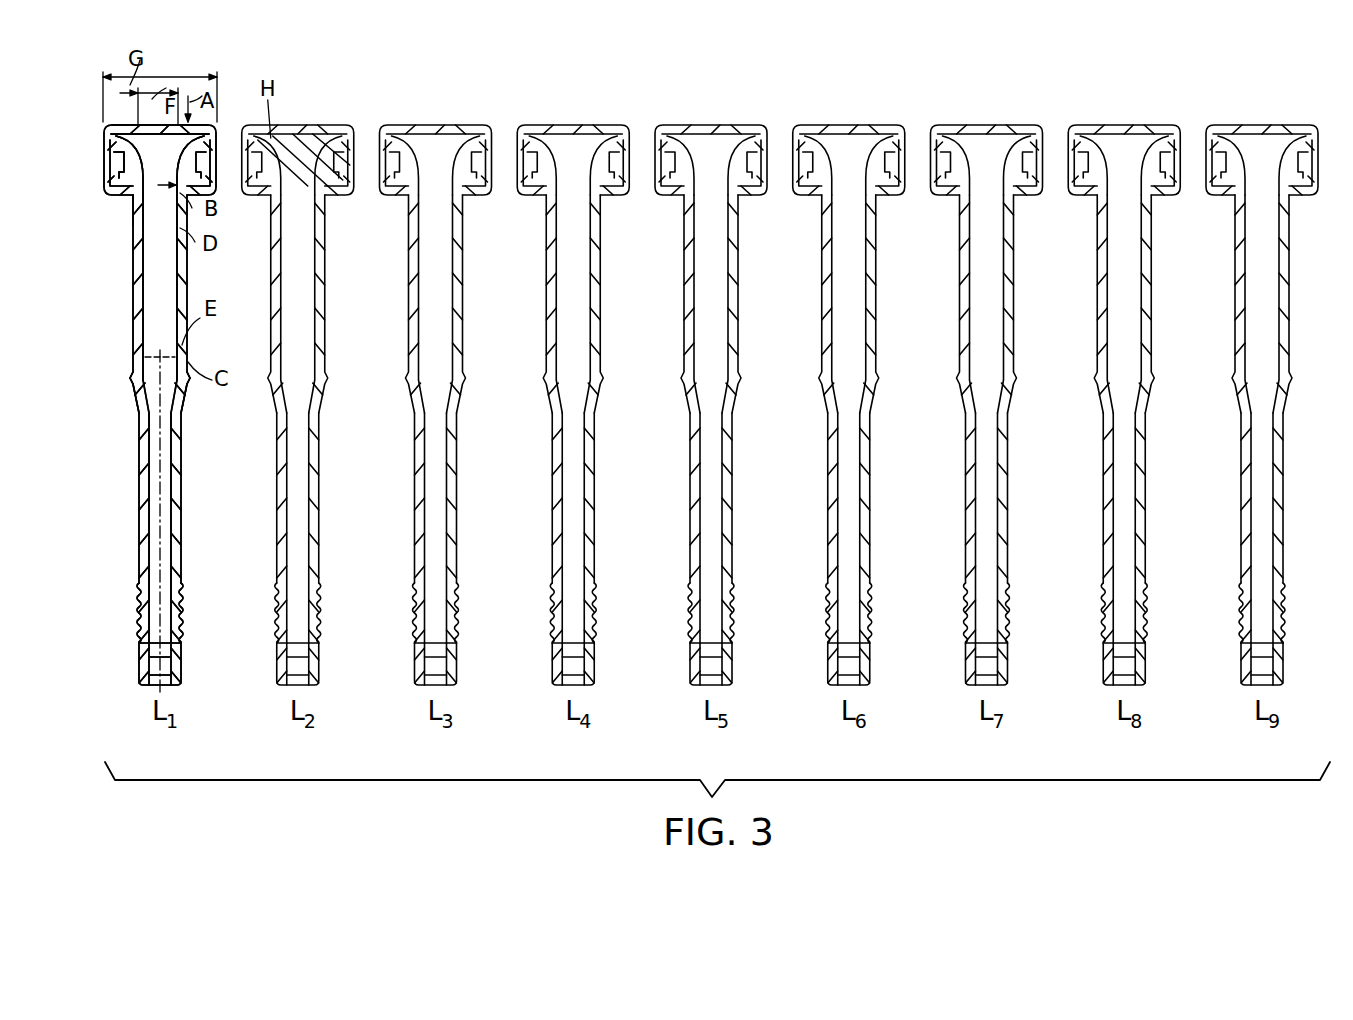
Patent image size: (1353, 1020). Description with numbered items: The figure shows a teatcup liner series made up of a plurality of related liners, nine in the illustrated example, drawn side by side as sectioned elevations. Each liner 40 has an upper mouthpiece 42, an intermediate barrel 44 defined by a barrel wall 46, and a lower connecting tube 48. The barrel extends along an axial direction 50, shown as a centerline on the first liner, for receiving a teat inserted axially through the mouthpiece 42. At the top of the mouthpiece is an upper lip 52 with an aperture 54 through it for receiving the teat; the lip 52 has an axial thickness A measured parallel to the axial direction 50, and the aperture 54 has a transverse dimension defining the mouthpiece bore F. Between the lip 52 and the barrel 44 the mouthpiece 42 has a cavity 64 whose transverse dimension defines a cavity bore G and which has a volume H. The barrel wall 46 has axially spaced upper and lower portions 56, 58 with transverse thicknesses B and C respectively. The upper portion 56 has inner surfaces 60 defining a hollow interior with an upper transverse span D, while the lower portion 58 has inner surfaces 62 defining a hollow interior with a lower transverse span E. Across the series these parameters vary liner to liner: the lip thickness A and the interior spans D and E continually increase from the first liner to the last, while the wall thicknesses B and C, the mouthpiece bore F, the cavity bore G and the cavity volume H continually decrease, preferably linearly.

The liner 40 is at (142, 405).
The upper mouthpiece 42 is at (135, 160).
The intermediate barrel 44 is at (129, 304).
The barrel wall 46 is at (122, 287).
The lower connecting tube 48 is at (135, 549).
The axial direction 50 is at (134, 528).
The upper lip 52 is at (132, 105).
The aperture 54 is at (160, 165).
The upper portion of barrel wall 56 is at (93, 174).
The lower portion of barrel wall 58 is at (134, 363).
The inner surfaces of upper portion 60 is at (106, 210).
The inner surfaces of lower portion 62 is at (132, 389).
The cavity 64 is at (132, 134).